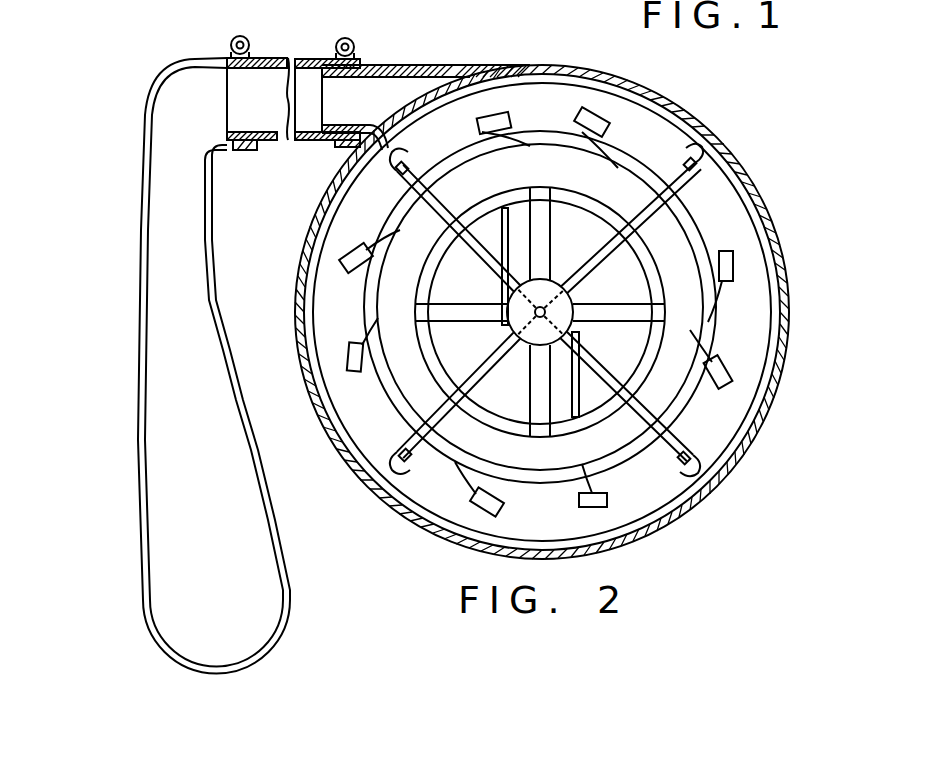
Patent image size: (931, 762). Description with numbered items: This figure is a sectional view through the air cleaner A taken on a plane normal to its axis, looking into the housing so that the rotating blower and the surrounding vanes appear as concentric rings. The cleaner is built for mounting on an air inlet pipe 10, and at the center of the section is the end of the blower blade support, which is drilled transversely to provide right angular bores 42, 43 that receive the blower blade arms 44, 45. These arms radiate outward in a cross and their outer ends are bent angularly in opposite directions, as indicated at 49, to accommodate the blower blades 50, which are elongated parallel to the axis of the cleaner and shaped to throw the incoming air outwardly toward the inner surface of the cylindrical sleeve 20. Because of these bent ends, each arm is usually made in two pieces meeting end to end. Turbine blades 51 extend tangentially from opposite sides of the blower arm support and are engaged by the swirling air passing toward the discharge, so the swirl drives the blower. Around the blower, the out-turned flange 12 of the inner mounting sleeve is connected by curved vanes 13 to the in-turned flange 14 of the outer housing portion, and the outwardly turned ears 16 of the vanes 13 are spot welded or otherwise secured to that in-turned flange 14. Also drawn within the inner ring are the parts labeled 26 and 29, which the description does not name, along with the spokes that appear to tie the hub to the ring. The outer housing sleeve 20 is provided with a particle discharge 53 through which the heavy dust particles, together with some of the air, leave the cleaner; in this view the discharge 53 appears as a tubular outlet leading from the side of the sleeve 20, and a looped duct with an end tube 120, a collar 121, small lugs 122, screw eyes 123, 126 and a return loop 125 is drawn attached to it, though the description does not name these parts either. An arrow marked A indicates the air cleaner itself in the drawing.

The air inlet pipe 10 is at (591, 195).
The out-turned flange 12 is at (673, 253).
The curved vanes 13 is at (600, 125).
The in-turned flange 14 is at (727, 215).
The outwardly turned ears 16 is at (500, 118).
The cylindrical sleeve 20 is at (645, 97).
The inner ring 26 is at (487, 307).
The vertical spoke 29 is at (536, 257).
The right angular bore 42 is at (576, 333).
The right angular bore 43 is at (506, 332).
The blower blade arm 44 is at (432, 212).
The blower blade arm 45 is at (411, 382).
The bent outer ends 49 is at (400, 160).
The blower blades 50 is at (396, 170).
The turbine blades 51 is at (516, 222).
The particle discharge 53 is at (452, 80).
The tube 120 is at (307, 55).
The collar 121 is at (382, 62).
The lug 122 is at (277, 140).
The screw eye 123 is at (345, 37).
The handle loop 125 is at (213, 268).
The screw eye 126 is at (238, 38).
The air cleaner A is at (300, 338).